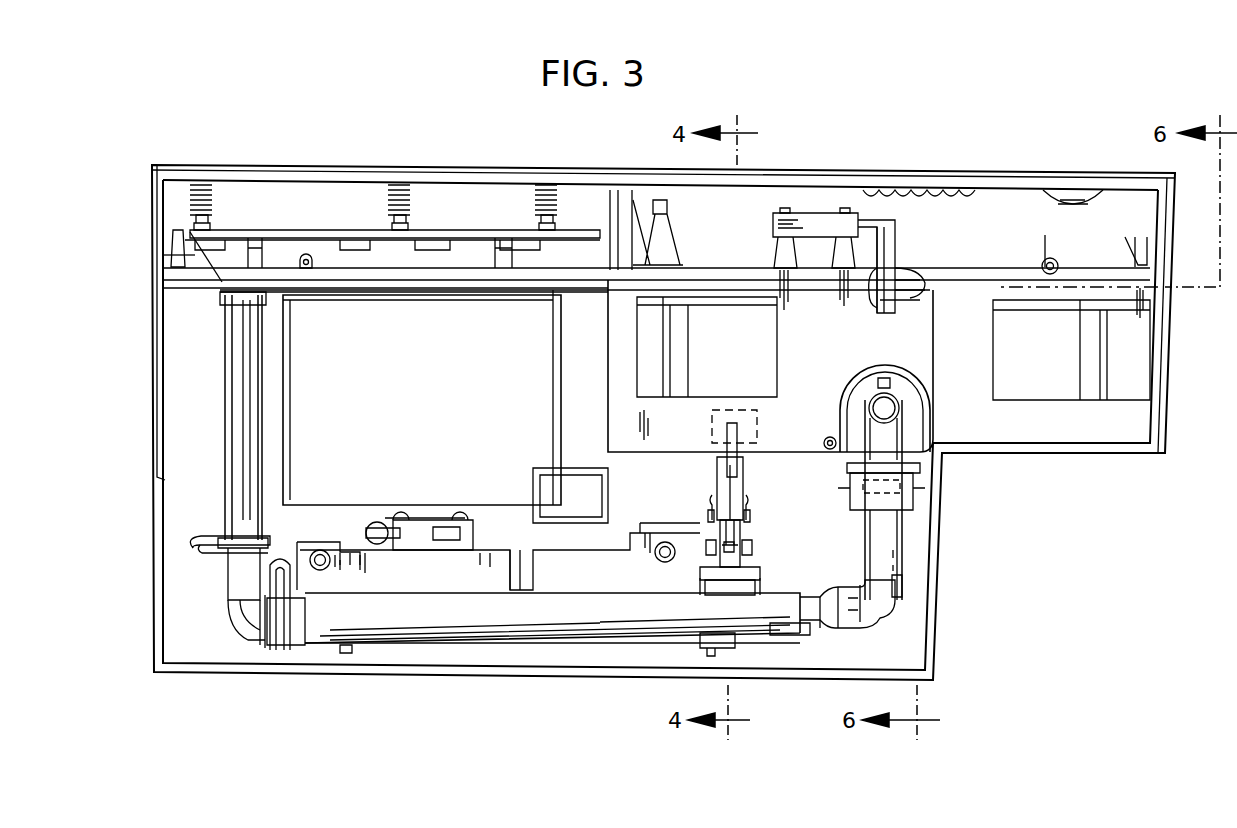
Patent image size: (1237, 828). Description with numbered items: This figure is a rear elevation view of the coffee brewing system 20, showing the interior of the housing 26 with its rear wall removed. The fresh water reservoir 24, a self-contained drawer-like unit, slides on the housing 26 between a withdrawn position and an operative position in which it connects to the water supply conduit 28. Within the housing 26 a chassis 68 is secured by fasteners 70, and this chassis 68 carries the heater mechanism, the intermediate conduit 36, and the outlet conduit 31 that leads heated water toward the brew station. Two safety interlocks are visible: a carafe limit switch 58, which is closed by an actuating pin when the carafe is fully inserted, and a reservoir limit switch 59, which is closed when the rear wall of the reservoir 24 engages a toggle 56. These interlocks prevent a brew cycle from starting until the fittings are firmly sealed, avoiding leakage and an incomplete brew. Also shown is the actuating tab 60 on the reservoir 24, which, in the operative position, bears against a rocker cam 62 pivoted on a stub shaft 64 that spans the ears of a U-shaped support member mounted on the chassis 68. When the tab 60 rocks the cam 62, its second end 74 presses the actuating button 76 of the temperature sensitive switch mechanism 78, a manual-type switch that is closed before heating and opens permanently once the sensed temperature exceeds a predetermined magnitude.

The coffee brewing system 20 is at (287, 693).
The fresh water reservoir 24 is at (760, 347).
The housing 26 is at (663, 422).
The water supply conduit 28 is at (878, 533).
The outlet conduit 31 is at (250, 383).
The intermediate conduit 36 is at (473, 626).
The toggle 56 is at (888, 250).
The carafe limit switch 58 is at (411, 522).
The reservoir limit switch 59 is at (816, 213).
The actuating tab 60 is at (757, 427).
The rocker cam 62 is at (708, 468).
The stub shaft 64 is at (755, 515).
The chassis 68 is at (443, 580).
The fasteners 70 is at (318, 548).
The second end 74 is at (722, 522).
The actuating button 76 is at (752, 550).
The temperature sensitive switch mechanism 78 is at (725, 575).